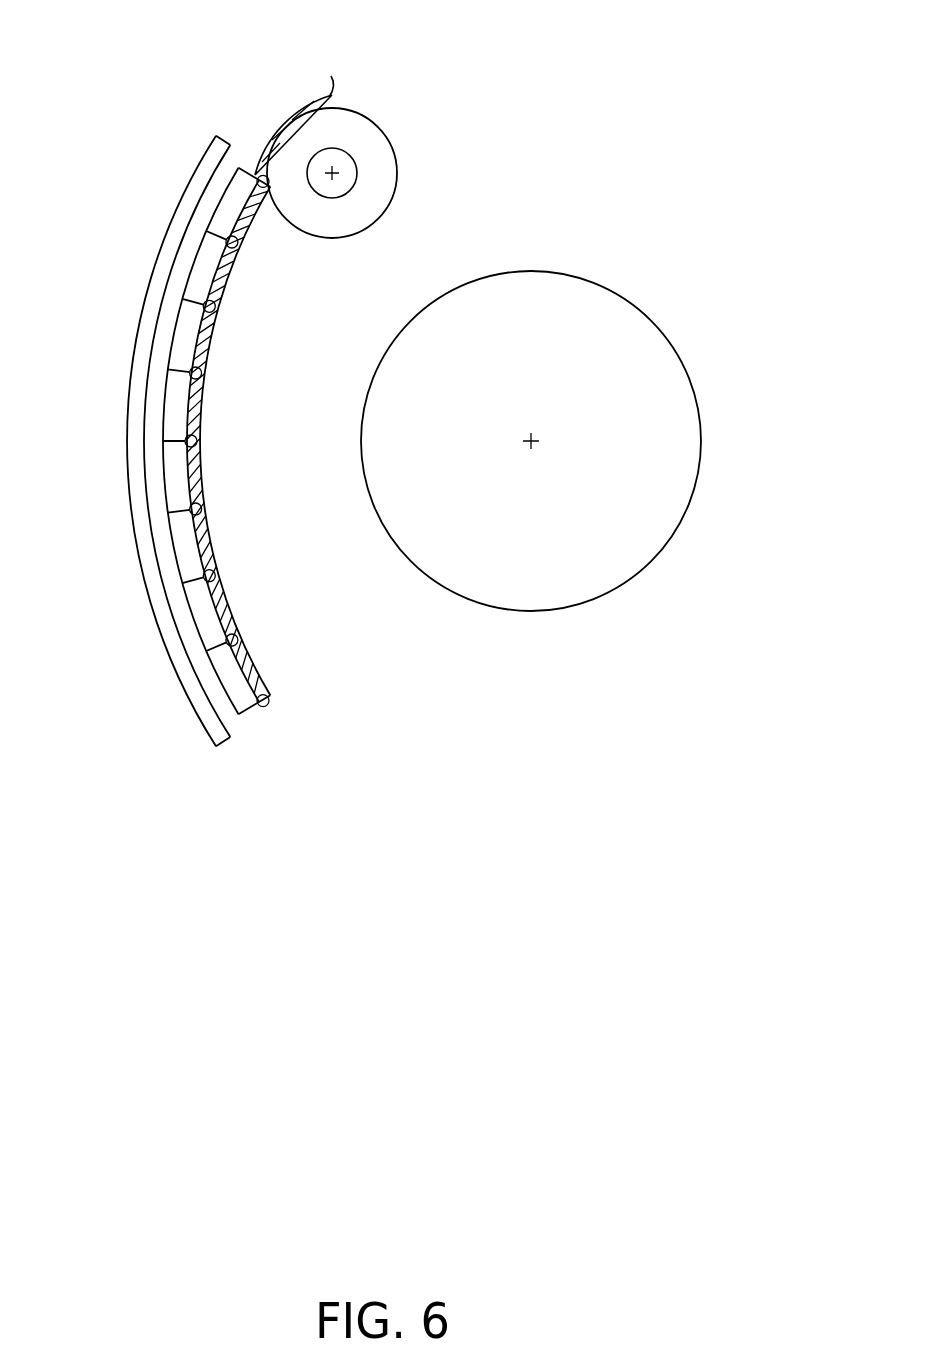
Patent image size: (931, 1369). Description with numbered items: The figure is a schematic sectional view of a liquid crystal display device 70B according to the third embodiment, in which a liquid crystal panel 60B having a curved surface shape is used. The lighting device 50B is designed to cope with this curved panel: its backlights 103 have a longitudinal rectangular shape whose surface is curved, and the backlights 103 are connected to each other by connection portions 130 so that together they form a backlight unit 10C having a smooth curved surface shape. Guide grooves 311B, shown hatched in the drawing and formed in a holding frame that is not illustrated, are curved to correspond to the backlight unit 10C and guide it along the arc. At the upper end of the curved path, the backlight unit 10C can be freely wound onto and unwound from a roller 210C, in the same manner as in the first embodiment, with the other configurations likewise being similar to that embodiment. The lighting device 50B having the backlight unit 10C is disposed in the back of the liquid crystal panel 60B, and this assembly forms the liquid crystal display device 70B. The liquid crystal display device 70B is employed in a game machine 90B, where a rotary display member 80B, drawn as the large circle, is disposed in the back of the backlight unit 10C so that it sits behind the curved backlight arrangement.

The backlight unit 10C is at (193, 391).
The lighting device 50B is at (384, 125).
The liquid crystal panel 60B is at (127, 442).
The liquid crystal display device 70B is at (244, 363).
The rotary display member 80B is at (701, 441).
The game machine 90B is at (580, 307).
The backlight 103 is at (203, 611).
The connection portion 130 is at (238, 642).
The roller 210C is at (387, 171).
The guide groove 311B is at (289, 105).